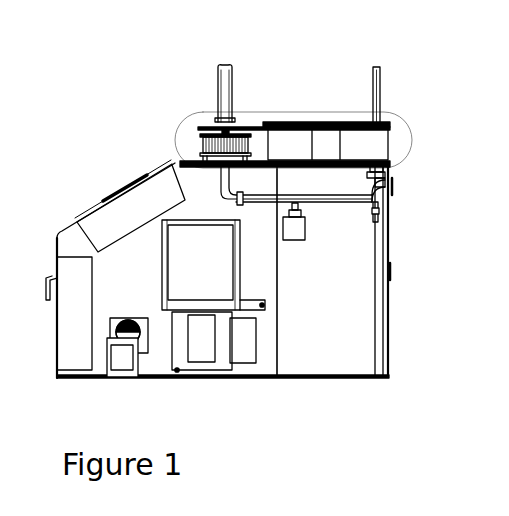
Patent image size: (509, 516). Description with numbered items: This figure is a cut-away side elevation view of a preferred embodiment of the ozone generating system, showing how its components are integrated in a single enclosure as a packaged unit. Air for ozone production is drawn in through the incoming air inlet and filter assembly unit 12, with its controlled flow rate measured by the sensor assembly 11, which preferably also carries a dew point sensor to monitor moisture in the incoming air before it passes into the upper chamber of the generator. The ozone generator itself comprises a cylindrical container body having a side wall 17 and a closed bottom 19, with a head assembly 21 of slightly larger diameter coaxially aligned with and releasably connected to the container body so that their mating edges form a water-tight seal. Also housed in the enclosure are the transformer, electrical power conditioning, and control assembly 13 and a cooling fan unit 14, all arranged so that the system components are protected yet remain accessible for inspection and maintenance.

The sensor assembly 11 is at (372, 222).
The incoming air inlet and filter assembly unit 12 is at (207, 147).
The transformer, electrical power conditioning, and control assembly 13 is at (165, 203).
The cooling fan unit 14 is at (128, 315).
The side wall 17 is at (377, 298).
The closed bottom 19 is at (362, 378).
The head assembly 21 is at (293, 112).